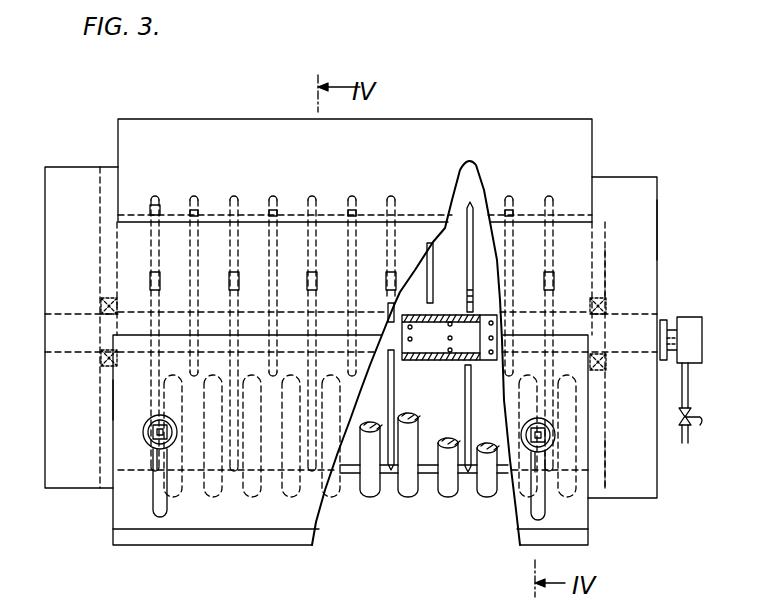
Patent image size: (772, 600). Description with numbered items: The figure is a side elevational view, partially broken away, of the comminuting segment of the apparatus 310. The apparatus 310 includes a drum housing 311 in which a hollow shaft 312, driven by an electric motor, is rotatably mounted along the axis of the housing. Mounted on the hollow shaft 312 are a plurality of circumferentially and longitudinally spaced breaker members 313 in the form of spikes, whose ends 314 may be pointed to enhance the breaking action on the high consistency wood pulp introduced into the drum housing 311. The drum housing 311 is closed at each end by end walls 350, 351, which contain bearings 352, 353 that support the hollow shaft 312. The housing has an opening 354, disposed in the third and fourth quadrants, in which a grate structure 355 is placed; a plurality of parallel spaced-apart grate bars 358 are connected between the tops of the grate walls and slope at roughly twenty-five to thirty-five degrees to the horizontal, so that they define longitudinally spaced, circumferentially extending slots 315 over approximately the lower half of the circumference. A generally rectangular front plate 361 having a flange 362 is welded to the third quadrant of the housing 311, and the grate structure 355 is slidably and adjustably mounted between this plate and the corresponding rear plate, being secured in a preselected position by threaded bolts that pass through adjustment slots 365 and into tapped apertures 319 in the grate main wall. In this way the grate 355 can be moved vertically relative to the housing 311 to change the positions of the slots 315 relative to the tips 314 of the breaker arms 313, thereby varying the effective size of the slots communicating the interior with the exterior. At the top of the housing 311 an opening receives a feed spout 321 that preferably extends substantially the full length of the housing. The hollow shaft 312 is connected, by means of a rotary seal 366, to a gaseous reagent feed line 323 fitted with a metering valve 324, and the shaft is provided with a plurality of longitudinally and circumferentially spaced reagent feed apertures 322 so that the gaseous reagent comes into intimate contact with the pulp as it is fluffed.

The apparatus 310 is at (659, 222).
The drum housing 311 is at (598, 450).
The hollow shaft 312 is at (659, 266).
The breaker members 313 is at (473, 237).
The ends of the spikes 314 is at (434, 198).
The slots 315 is at (390, 482).
The tapped apertures 319 is at (150, 448).
The feed spout 321 is at (582, 157).
The reagent feed apertures 322 is at (490, 338).
The gaseous reagent feed line 323 is at (682, 394).
The metering valve 324 is at (700, 425).
The end wall 350 is at (632, 196).
The end wall 351 is at (75, 180).
The bearing 352 is at (608, 322).
The bearing 353 is at (100, 312).
The opening 354 is at (352, 472).
The grate structure 355 is at (112, 512).
The grate bars 358 is at (410, 492).
The front plate 361 is at (127, 395).
The flange 362 is at (232, 537).
The adjustment slots 365 is at (158, 512).
The rotary seal 366 is at (690, 318).